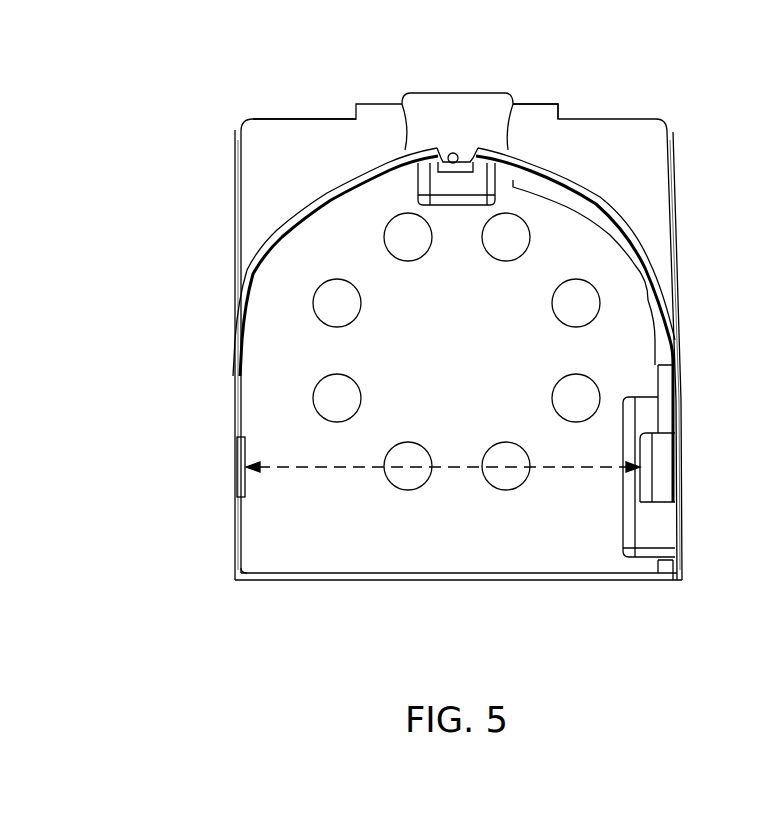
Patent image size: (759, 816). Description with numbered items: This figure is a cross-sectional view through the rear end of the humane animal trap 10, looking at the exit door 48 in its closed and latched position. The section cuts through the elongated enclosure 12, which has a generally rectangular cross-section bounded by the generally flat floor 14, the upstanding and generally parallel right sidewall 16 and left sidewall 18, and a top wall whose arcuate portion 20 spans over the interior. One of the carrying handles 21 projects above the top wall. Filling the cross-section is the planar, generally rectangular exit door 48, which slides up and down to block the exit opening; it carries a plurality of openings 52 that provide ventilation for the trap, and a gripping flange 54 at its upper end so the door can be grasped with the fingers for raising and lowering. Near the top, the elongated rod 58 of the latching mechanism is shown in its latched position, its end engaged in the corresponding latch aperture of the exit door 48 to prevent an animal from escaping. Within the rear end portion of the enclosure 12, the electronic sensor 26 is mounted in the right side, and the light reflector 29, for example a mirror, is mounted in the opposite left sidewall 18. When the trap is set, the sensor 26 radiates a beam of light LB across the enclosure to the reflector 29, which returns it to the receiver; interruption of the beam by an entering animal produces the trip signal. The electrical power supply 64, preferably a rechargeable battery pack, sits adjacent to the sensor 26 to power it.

The animal trap 10 is at (262, 72).
The enclosure 12 is at (610, 221).
The floor 14 is at (333, 573).
The right sidewall 16 is at (681, 405).
The left sidewall 18 is at (236, 375).
The arcuate portion of top wall 20 is at (561, 184).
The carrying handle 21 is at (463, 100).
The electronic sensor 26 is at (640, 490).
The light reflector 29 is at (246, 440).
The exit door 48 is at (302, 177).
The openings 52 is at (555, 318).
The gripping flange 54 is at (527, 108).
The elongated rod 58 is at (458, 148).
The electrical power supply 64 is at (645, 542).
The light beam LB is at (327, 471).